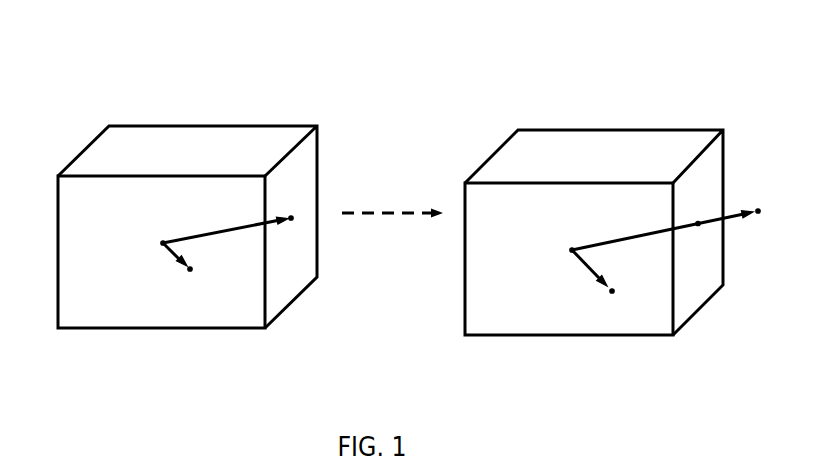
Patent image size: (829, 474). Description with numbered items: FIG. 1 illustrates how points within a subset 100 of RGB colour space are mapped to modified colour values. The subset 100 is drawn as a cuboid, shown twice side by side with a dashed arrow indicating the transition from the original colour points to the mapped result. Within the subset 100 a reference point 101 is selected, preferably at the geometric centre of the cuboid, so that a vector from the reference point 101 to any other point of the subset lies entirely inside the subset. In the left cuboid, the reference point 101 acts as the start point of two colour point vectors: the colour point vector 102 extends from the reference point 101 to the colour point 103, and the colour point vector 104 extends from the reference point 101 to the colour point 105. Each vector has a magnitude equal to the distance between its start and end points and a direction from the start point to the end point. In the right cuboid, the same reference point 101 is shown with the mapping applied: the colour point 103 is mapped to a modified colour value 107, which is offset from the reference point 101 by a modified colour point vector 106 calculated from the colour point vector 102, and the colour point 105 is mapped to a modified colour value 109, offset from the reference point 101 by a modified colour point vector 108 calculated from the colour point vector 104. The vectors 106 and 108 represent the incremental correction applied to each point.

The subset of RGB colour space 100 is at (110, 77).
The reference point 101 is at (163, 243).
The colour point vector 102 is at (217, 231).
The colour point 103 is at (291, 218).
The colour point vector 104 is at (169, 250).
The colour point 105 is at (190, 269).
The modified colour point vector 106 is at (698, 223).
The modified colour value 107 is at (758, 211).
The modified colour point vector 108 is at (600, 278).
The modified colour value 109 is at (612, 291).